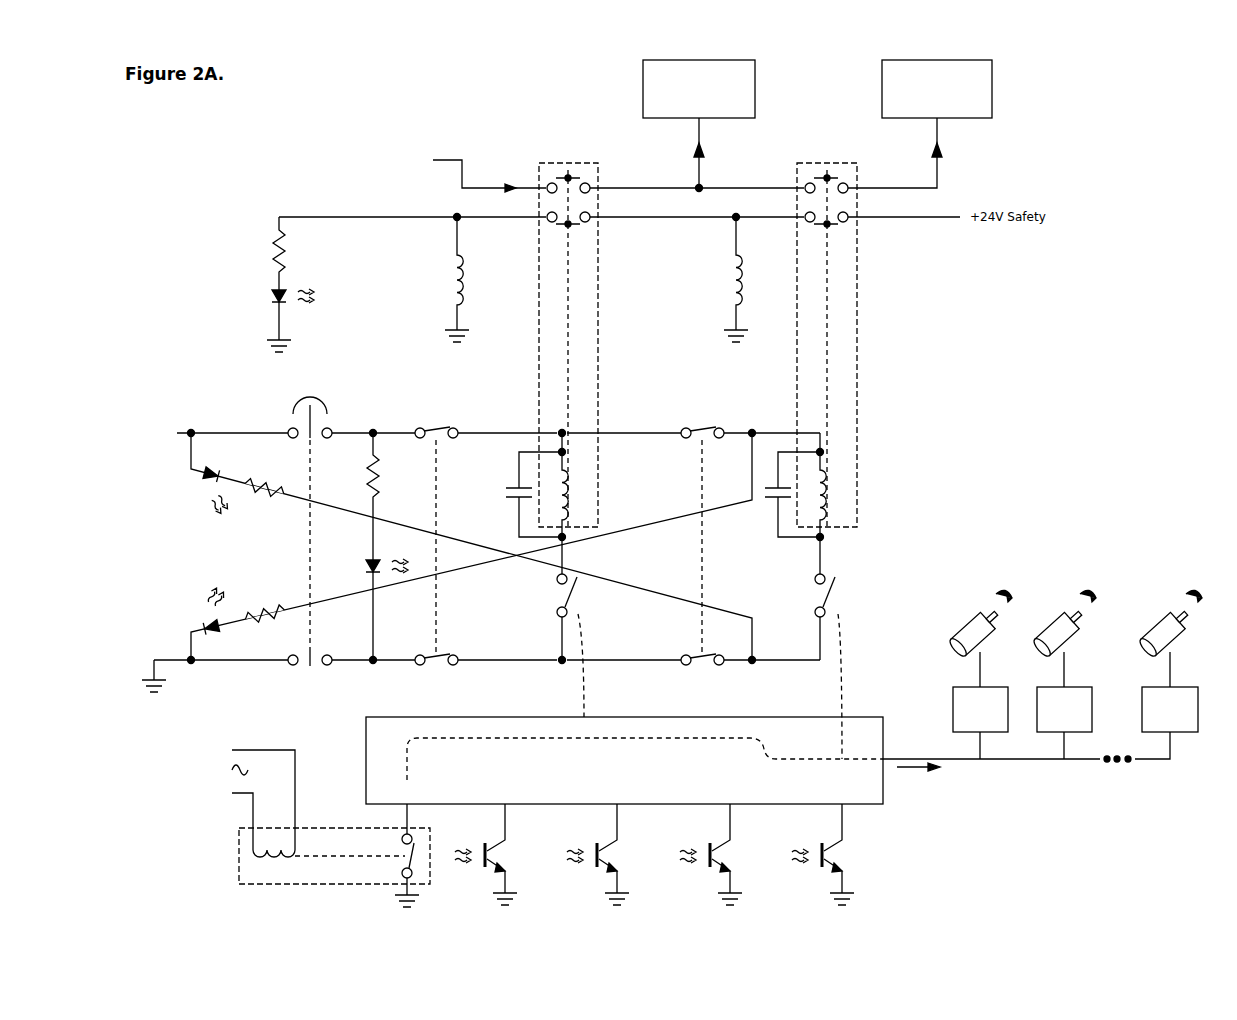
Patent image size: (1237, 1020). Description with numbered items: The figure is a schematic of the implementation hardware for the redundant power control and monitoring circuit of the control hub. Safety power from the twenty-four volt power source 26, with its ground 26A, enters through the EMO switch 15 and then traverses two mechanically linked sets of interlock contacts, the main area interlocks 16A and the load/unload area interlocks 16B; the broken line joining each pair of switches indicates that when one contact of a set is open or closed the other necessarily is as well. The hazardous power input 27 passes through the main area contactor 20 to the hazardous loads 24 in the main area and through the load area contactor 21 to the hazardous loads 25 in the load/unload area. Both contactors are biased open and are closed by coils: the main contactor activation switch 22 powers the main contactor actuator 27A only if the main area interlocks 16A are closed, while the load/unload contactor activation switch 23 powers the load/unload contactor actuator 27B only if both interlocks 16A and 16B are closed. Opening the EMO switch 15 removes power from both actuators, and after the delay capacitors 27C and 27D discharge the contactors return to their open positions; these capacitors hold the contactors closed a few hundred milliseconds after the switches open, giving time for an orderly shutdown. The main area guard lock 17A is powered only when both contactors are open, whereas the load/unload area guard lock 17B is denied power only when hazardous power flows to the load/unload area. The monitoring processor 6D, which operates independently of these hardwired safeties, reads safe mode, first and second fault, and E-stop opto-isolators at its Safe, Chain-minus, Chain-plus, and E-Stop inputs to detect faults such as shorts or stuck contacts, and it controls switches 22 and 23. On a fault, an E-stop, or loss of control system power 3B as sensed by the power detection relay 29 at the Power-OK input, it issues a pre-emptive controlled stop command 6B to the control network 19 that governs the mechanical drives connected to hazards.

The hazardous power input 27 is at (430, 158).
The main area contactor 20 is at (600, 268).
The load area contactor 21 is at (860, 265).
The hazardous loads in the main area 24 is at (755, 93).
The hazardous loads in the load/unload area 25 is at (992, 98).
The main area guard lock 17A is at (437, 278).
The load/unload area guard lock 17B is at (705, 278).
The EMO switch 15 is at (310, 527).
The main area interlocks 16A is at (437, 532).
The load/unload area interlocks 16B is at (700, 532).
The power source 26 is at (457, 423).
The ground 26A is at (481, 679).
The main contactor actuator 27A is at (587, 487).
The load/unload contactor actuator 27B is at (846, 487).
The delay capacitor 27C is at (515, 494).
The delay capacitor 27D is at (775, 499).
The main contactor activation switch 22 is at (580, 627).
The load/unload contactor activation switch 23 is at (839, 648).
The monitoring processor 6D is at (366, 745).
The control system power 3B is at (216, 800).
The power detection relay 29 is at (239, 870).
The control network 19 is at (1042, 674).
The pre-emptive controlled stop command 6B is at (920, 773).